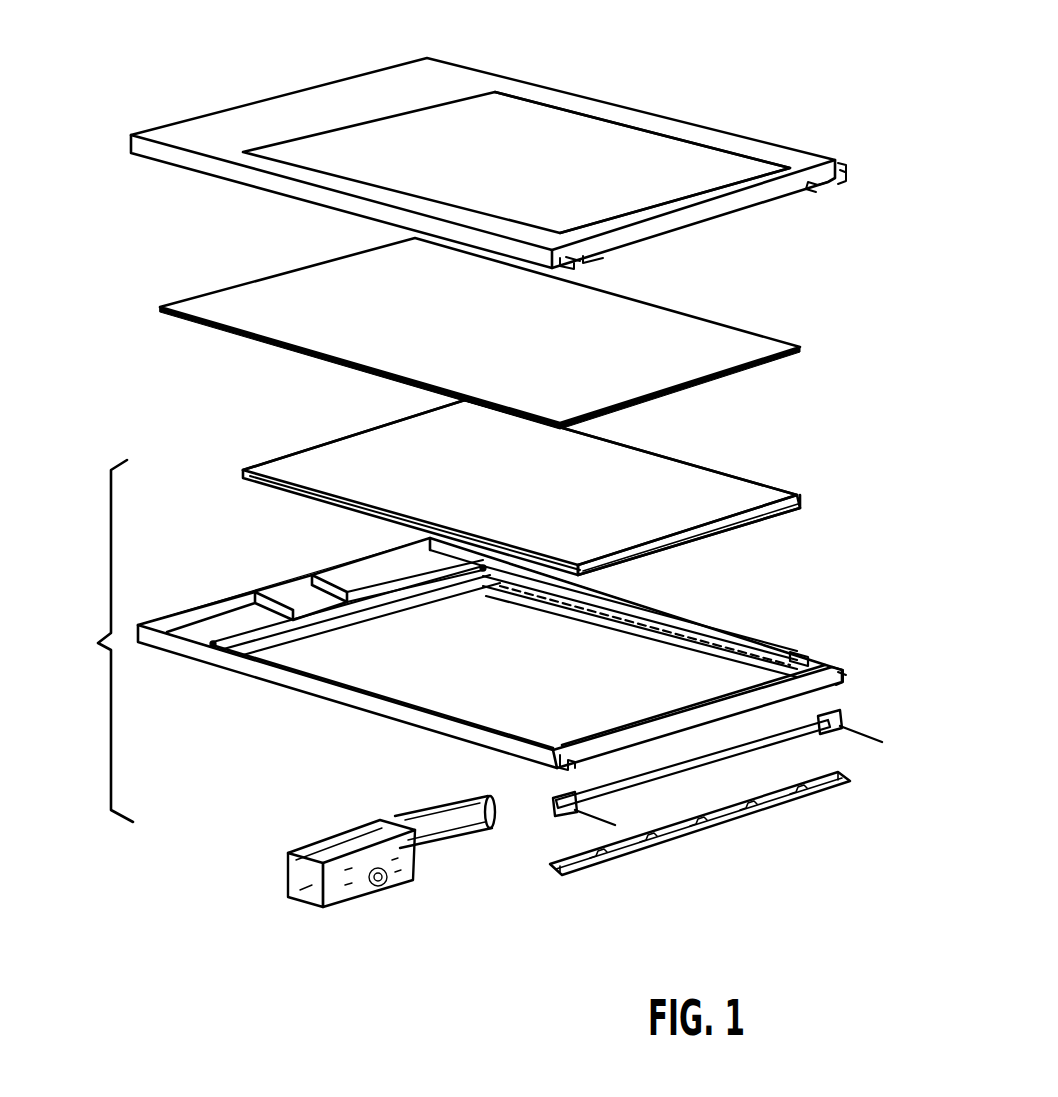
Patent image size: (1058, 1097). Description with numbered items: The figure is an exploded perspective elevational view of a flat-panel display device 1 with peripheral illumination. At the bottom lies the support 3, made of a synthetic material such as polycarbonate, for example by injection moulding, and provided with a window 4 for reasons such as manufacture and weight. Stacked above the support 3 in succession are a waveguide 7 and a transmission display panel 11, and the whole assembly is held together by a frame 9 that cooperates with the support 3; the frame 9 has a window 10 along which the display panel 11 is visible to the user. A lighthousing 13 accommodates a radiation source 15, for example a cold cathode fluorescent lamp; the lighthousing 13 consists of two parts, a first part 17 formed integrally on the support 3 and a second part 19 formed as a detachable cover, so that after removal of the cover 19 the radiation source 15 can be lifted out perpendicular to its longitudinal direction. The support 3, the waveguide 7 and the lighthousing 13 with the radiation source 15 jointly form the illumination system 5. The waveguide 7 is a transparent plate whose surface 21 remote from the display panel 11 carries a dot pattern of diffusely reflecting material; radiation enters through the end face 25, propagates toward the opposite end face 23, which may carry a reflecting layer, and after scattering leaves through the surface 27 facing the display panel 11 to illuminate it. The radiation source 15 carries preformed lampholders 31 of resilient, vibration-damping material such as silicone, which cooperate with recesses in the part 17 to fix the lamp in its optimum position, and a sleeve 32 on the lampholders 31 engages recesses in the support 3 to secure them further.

The flat-panel display device 1 is at (375, 740).
The support 3 is at (197, 655).
The window 4 is at (502, 722).
The illumination system 5 is at (96, 648).
The waveguide 7 is at (255, 480).
The frame 9 is at (433, 76).
The window 10 is at (708, 160).
The transmission display panel 11 is at (755, 345).
The lighthousing 13 is at (858, 690).
The radiation source 15 is at (805, 745).
The first part 17 is at (612, 758).
The second part 19 is at (607, 852).
The surface 21 is at (295, 498).
The end face 23 is at (338, 442).
The end face 25 is at (695, 540).
The surface 27 is at (715, 490).
The lampholders 31 is at (840, 718).
The sleeve 32 is at (375, 888).